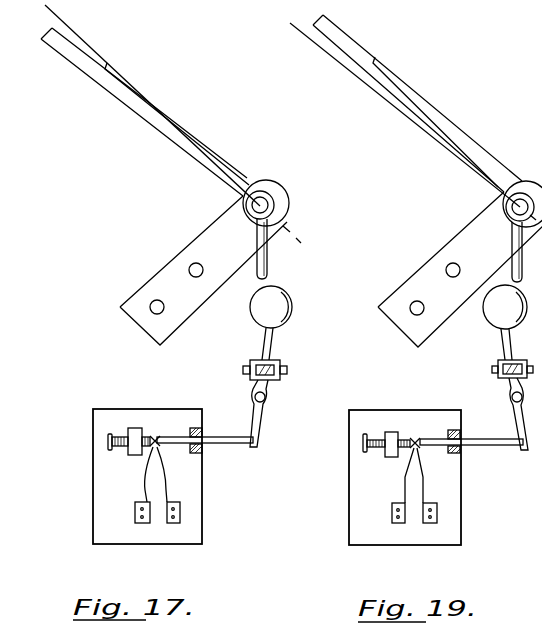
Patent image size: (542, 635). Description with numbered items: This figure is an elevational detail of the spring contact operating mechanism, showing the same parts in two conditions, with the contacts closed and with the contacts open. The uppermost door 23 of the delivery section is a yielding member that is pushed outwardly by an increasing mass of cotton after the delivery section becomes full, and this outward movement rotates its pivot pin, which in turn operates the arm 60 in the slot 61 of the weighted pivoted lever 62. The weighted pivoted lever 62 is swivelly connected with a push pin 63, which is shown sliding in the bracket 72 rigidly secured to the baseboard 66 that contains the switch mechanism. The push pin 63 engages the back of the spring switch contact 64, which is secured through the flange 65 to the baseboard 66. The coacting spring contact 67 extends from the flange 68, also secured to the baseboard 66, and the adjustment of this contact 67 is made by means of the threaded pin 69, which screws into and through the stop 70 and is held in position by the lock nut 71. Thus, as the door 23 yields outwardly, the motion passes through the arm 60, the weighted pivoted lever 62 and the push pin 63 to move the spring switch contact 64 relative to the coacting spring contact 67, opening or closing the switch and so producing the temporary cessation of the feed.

In FIG. 17, the door 23 is at (112, 88).
In FIG. 19, the door 23 is at (416, 111).
In FIG. 17, the arm 60 is at (267, 260).
In FIG. 19, the arm 60 is at (520, 267).
In FIG. 17, the slot 61 is at (272, 363).
In FIG. 19, the slot 61 is at (517, 360).
In FIG. 17, the weighted pivoted lever 62 is at (263, 343).
In FIG. 19, the weighted pivoted lever 62 is at (507, 348).
In FIG. 17, the push pin 63 is at (217, 444).
In FIG. 19, the push pin 63 is at (492, 446).
In FIG. 17, the spring switch contact 64 is at (158, 447).
In FIG. 19, the spring switch contact 64 is at (418, 448).
In FIG. 17, the flange 65 is at (180, 503).
In FIG. 19, the flange 65 is at (434, 505).
In FIG. 19, the baseboard 66 is at (461, 512).
In FIG. 17, the coacting spring contact 67 is at (149, 446).
In FIG. 19, the coacting spring contact 67 is at (408, 448).
In FIG. 17, the flange 68 is at (135, 510).
In FIG. 19, the flange 68 is at (392, 505).
In FIG. 17, the threaded pin 69 is at (120, 435).
In FIG. 19, the threaded pin 69 is at (377, 438).
In FIG. 17, the stop 70 is at (135, 428).
In FIG. 19, the stop 70 is at (392, 432).
In FIG. 17, the lock nut 71 is at (124, 451).
In FIG. 19, the lock nut 71 is at (382, 452).
In FIG. 17, the bracket 72 is at (202, 432).
In FIG. 19, the bracket 72 is at (458, 437).